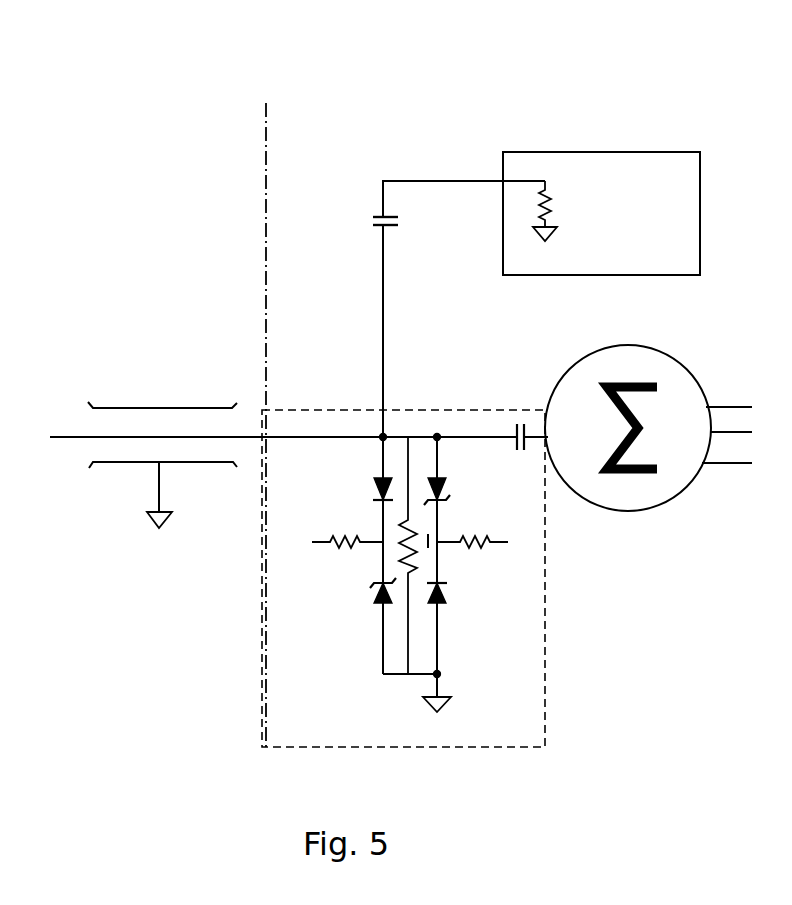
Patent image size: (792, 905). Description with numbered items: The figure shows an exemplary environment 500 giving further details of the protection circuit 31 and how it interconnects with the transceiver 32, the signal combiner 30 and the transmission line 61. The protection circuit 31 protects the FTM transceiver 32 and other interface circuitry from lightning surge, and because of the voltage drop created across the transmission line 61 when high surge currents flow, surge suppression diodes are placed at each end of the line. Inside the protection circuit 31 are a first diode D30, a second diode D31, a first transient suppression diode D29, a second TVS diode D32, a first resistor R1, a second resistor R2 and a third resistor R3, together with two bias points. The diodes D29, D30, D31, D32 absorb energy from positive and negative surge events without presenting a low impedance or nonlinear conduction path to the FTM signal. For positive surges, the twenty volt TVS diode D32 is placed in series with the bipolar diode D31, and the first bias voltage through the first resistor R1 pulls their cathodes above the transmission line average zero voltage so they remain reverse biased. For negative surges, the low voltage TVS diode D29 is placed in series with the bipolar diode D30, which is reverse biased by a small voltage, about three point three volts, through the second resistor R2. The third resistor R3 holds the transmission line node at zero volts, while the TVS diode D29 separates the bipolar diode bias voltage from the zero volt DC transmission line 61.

The environment 500 is at (348, 43).
The transmission line 61 is at (155, 402).
The protection circuit 31 is at (347, 410).
The transceiver 32 is at (703, 148).
The signal combiner 30 is at (690, 357).
The first transient suppression (TVS) diode D29 is at (462, 491).
The first diode D30 is at (463, 595).
The second diode D31 is at (357, 489).
The second TVS diode D32 is at (355, 593).
The first resistor R1 is at (347, 530).
The second resistor R2 is at (472, 530).
The third resistor R3 is at (415, 555).